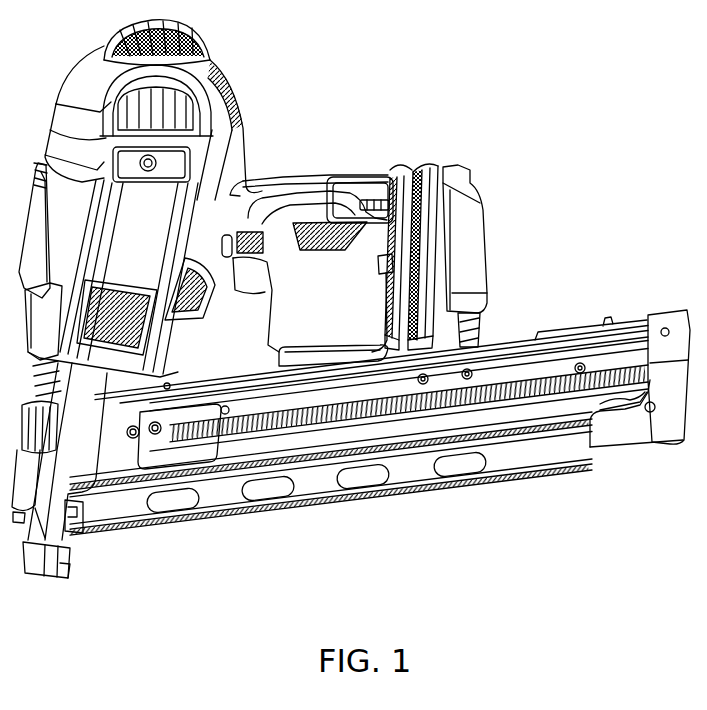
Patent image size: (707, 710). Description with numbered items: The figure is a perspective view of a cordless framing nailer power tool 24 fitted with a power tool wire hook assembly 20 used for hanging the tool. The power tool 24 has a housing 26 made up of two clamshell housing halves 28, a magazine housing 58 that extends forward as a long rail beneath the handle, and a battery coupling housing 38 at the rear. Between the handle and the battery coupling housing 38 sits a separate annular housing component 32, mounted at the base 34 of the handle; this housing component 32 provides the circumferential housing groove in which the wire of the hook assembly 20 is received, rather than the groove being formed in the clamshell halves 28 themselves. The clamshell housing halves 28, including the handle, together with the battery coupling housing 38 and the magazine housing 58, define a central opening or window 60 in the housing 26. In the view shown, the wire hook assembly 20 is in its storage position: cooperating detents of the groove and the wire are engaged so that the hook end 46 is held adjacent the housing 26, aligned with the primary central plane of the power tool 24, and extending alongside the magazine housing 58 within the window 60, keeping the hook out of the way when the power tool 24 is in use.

The power tool wire hook assembly 20 is at (385, 279).
The power tool 24 is at (505, 108).
The housing 26 is at (291, 158).
The clamshell housing halves 28 is at (86, 58).
The housing component 32 is at (423, 176).
The base of the handle 34 is at (391, 178).
The battery coupling housing 38 is at (478, 229).
The hook end 46 is at (293, 349).
The magazine housing 58 is at (536, 441).
The window 60 is at (318, 297).